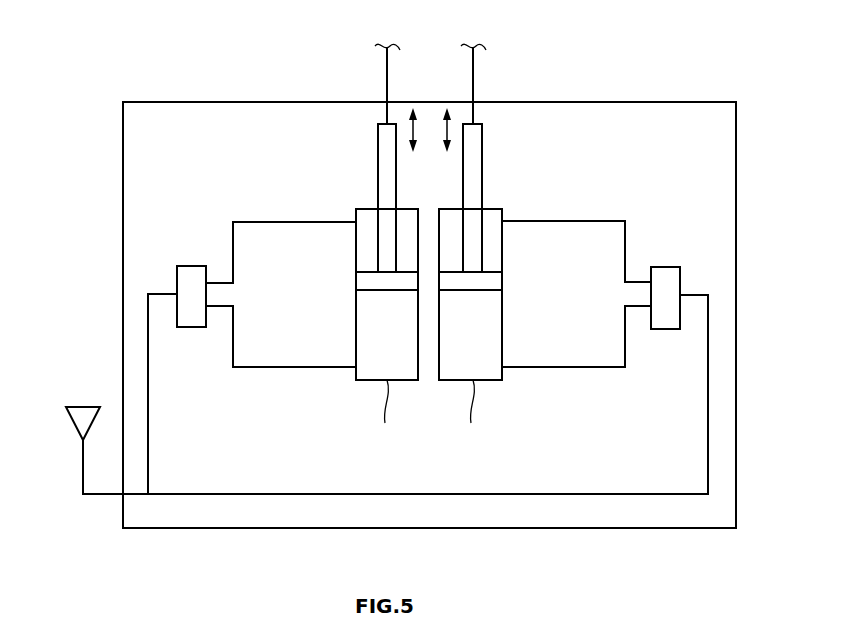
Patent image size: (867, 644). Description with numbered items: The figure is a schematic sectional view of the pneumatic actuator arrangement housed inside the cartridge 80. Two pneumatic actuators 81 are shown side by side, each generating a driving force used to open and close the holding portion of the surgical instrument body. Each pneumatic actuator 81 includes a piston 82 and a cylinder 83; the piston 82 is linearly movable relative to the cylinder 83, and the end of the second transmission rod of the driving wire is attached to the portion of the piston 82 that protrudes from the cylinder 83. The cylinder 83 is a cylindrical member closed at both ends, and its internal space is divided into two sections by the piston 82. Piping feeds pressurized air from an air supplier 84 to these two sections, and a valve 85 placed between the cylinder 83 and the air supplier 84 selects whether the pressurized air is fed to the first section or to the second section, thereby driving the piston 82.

The cartridge 80 is at (123, 181).
The piston 82 is at (378, 185).
The pneumatic actuator 81 is at (344, 292).
The cylinder 83 is at (430, 417).
The air supplier 84 is at (83, 407).
The valve 85 is at (192, 327).